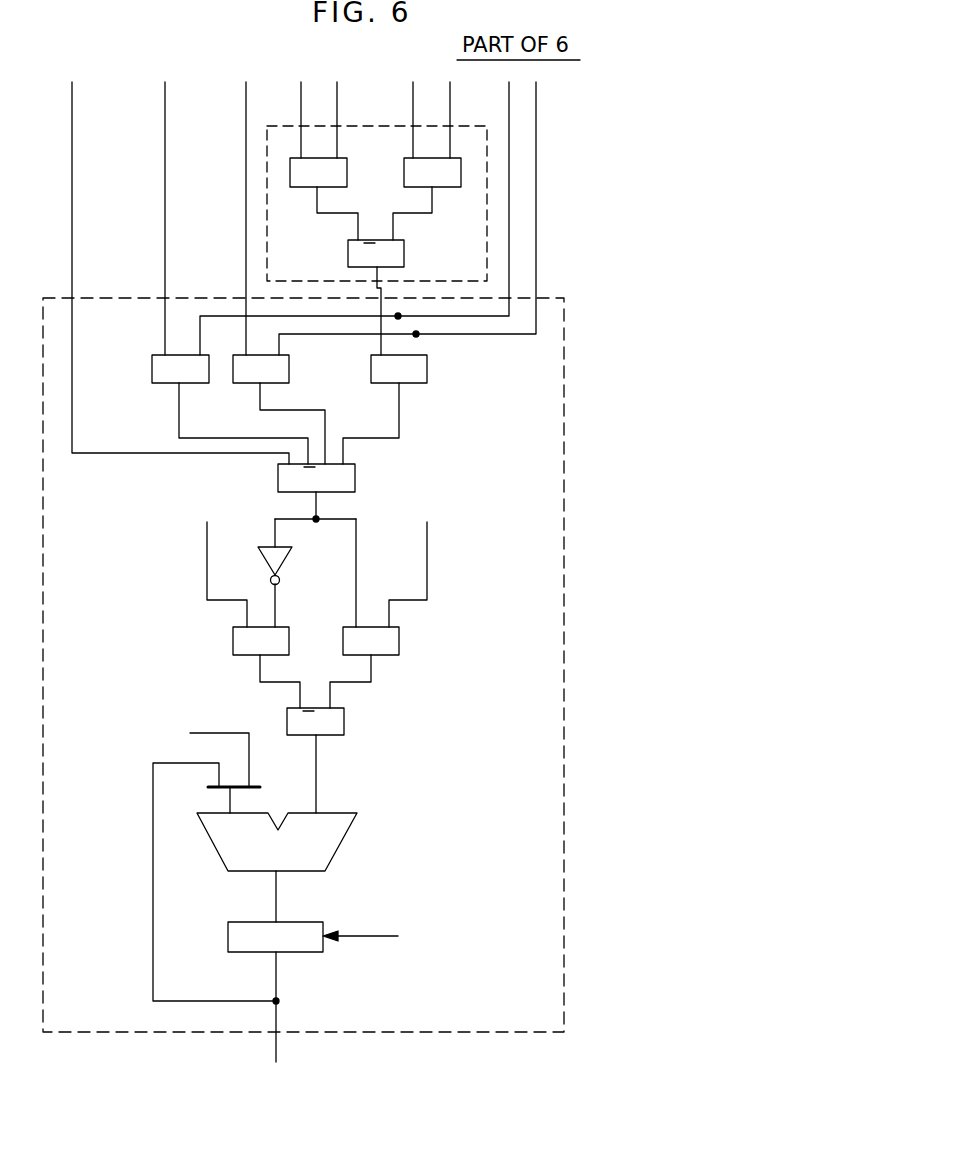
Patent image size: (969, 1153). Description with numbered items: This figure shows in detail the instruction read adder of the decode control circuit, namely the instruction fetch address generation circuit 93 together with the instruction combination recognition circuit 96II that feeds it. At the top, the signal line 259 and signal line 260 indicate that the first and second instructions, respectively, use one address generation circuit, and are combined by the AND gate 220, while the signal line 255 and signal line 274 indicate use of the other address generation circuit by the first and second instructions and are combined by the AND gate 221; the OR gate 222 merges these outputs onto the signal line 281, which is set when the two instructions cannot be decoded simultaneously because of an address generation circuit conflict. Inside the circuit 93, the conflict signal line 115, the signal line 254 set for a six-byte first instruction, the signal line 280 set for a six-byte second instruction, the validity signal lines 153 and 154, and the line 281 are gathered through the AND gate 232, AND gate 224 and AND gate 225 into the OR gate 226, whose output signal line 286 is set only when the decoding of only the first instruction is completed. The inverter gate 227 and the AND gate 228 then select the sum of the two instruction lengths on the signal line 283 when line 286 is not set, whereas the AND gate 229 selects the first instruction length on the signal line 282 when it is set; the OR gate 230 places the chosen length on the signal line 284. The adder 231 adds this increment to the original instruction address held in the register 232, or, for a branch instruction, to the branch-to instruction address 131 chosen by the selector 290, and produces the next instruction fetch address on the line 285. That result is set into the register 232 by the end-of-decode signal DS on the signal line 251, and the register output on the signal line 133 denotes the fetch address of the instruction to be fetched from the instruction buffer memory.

The signal line 115 is at (73, 145).
The signal line 254 is at (166, 145).
The signal line 259 is at (300, 113).
The signal line 260 is at (338, 90).
The signal line 255 is at (412, 113).
The signal line 274 is at (469, 110).
The signal line 153 is at (510, 92).
The signal line 154 is at (537, 128).
The signal line 280 is at (245, 188).
The AND gate 220 is at (300, 188).
The AND gate 221 is at (450, 188).
The OR gate 222 is at (405, 250).
The instruction combination recognition circuit 96II is at (488, 188).
The instruction fetch address generation circuit 93 is at (565, 378).
The register 232 is at (152, 369).
The AND gate 224 is at (290, 369).
The AND gate 225 is at (428, 369).
The signal line 281 is at (400, 410).
The OR gate 226 is at (356, 475).
The inverter gate 227 is at (286, 560).
The signal line 286 is at (357, 545).
The signal line 283 is at (206, 553).
The signal line 282 is at (428, 553).
The AND gate 228 is at (232, 640).
The AND gate 229 is at (400, 640).
The OR gate 230 is at (345, 722).
The signal line 284 is at (317, 770).
The branch-to instruction address 131 is at (215, 732).
The selector 290 is at (240, 790).
The adder 231 is at (340, 840).
The line 285 is at (275, 893).
The signal line 133 is at (275, 978).
The signal line 251 is at (368, 937).